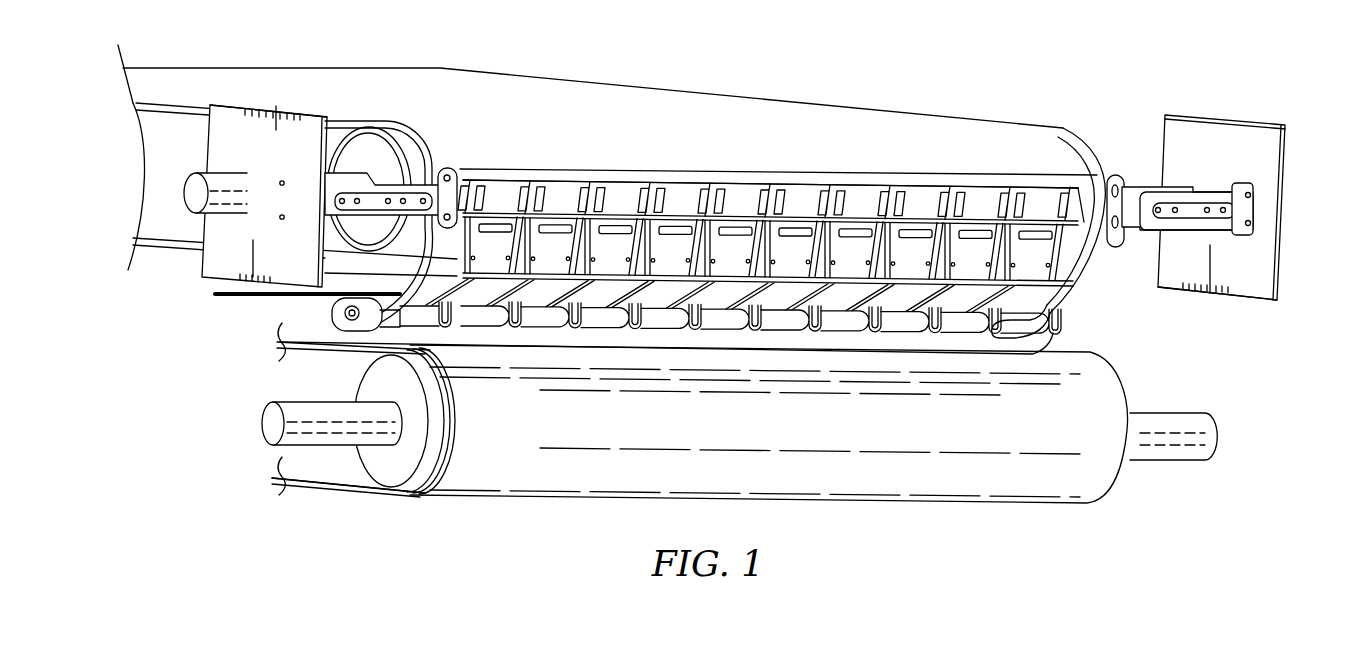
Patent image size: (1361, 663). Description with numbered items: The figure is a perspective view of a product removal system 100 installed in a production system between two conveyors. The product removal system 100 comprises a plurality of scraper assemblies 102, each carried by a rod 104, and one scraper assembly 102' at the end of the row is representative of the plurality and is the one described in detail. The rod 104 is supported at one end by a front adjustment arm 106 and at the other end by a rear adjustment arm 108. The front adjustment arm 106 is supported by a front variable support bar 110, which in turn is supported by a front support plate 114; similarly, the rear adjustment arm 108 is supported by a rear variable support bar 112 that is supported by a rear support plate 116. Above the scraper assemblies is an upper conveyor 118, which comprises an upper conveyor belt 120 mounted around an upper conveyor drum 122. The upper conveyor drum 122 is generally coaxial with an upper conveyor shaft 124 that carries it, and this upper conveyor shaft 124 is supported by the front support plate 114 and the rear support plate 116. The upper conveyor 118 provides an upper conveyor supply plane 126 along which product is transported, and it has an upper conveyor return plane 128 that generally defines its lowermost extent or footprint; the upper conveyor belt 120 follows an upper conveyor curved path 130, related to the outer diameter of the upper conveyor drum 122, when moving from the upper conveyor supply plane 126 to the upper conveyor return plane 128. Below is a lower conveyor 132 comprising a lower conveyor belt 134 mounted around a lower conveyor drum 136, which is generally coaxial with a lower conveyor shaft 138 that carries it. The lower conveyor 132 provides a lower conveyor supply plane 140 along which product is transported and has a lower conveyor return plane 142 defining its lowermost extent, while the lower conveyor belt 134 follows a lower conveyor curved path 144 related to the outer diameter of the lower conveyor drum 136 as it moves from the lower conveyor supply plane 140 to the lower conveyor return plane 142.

The product removal system 100 is at (925, 90).
The scraper assemblies 102 is at (714, 236).
The scraper assembly 102' is at (1018, 236).
The rod 104 is at (982, 330).
The front adjustment arm 106 is at (327, 330).
The rear adjustment arm 108 is at (1122, 185).
The front variable support bar 110 is at (383, 188).
The rear variable support bar 112 is at (1213, 245).
The front support plate 114 is at (217, 260).
The rear support plate 116 is at (1270, 247).
The upper conveyor 118 is at (1085, 129).
The upper conveyor belt 120 is at (283, 100).
The upper conveyor drum 122 is at (372, 152).
The upper conveyor shaft 124 is at (233, 175).
The upper conveyor supply plane 126 is at (592, 120).
The upper conveyor return plane 128 is at (162, 247).
The upper conveyor curved path 130 is at (1098, 160).
The lower conveyor 132 is at (421, 494).
The lower conveyor belt 134 is at (328, 490).
The lower conveyor drum 136 is at (420, 422).
The lower conveyor shaft 138 is at (265, 427).
The lower conveyor supply plane 140 is at (380, 353).
The lower conveyor return plane 142 is at (360, 492).
The lower conveyor curved path 144 is at (450, 460).